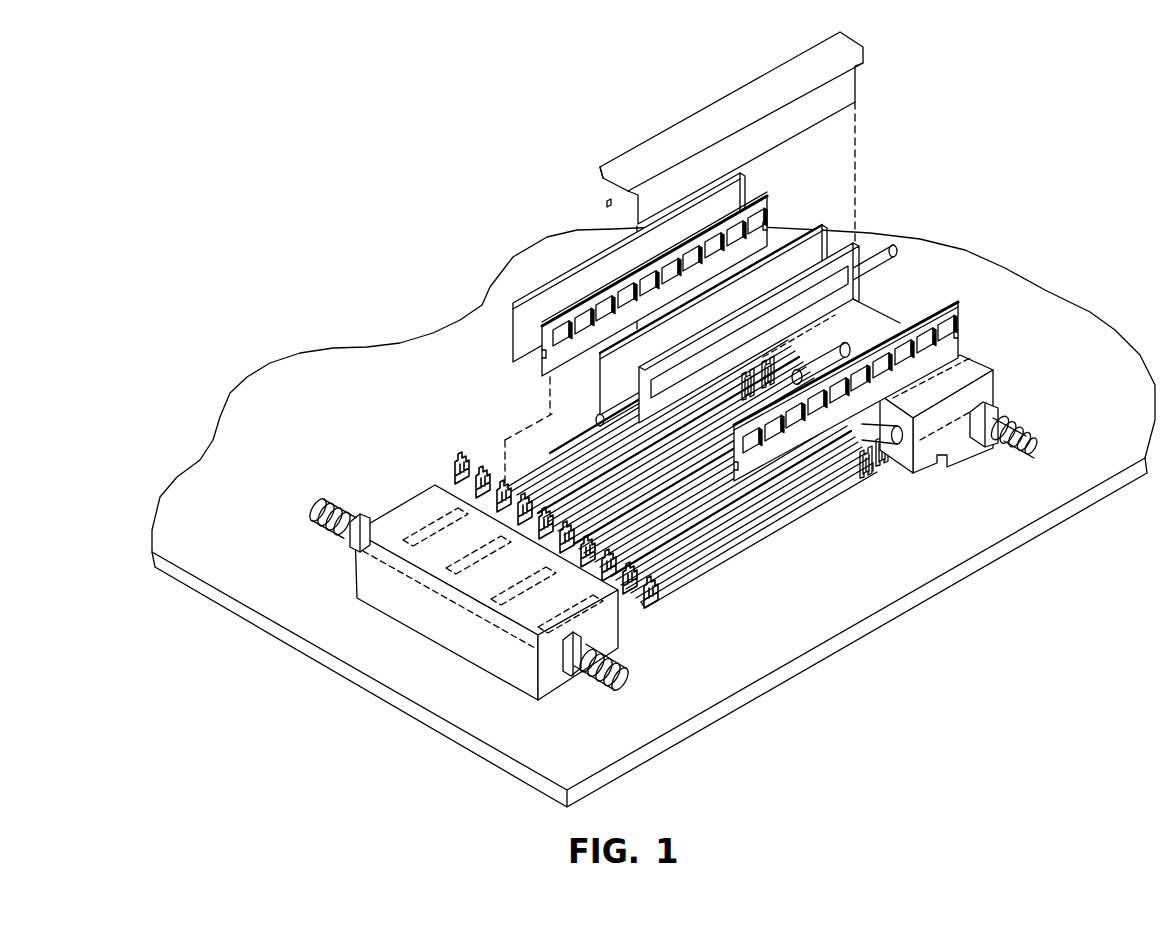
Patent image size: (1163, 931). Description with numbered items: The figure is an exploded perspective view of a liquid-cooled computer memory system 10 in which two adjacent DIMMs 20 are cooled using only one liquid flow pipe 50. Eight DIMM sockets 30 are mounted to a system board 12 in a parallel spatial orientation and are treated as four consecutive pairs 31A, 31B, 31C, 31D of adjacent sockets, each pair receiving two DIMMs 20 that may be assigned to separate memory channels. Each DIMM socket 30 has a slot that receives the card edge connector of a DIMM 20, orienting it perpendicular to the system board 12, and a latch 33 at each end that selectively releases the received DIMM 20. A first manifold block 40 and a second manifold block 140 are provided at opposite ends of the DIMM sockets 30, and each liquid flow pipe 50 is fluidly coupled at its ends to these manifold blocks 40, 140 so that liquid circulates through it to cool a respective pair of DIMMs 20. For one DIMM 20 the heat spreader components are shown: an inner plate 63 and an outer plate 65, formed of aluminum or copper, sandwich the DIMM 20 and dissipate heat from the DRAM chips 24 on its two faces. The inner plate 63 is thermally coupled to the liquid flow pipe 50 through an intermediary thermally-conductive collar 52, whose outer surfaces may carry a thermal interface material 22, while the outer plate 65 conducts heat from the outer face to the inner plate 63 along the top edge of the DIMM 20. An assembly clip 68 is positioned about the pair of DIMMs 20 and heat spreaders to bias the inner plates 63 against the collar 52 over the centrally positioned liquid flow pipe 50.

The liquid-cooled computer memory system 10 is at (1008, 117).
The system board 12 is at (1113, 427).
The DIMM 20 is at (771, 315).
The thermal interface material 22 is at (878, 306).
The DRAM chips 24 is at (585, 323).
The DIMM socket 30 is at (686, 463).
The pair of DIMM sockets 31A is at (550, 468).
The pair of DIMM sockets 31B is at (567, 505).
The pair of DIMM sockets 31C is at (612, 548).
The pair of DIMM sockets 31D is at (648, 590).
The latch 33 is at (465, 480).
The first manifold block 40 is at (412, 498).
The liquid flow pipe 50 is at (876, 250).
The thermally-conductive collar 52 is at (843, 235).
The inner plate 63 is at (600, 380).
The outer plate 65 is at (505, 328).
The assembly clip 68 is at (747, 86).
The second manifold block 140 is at (989, 362).